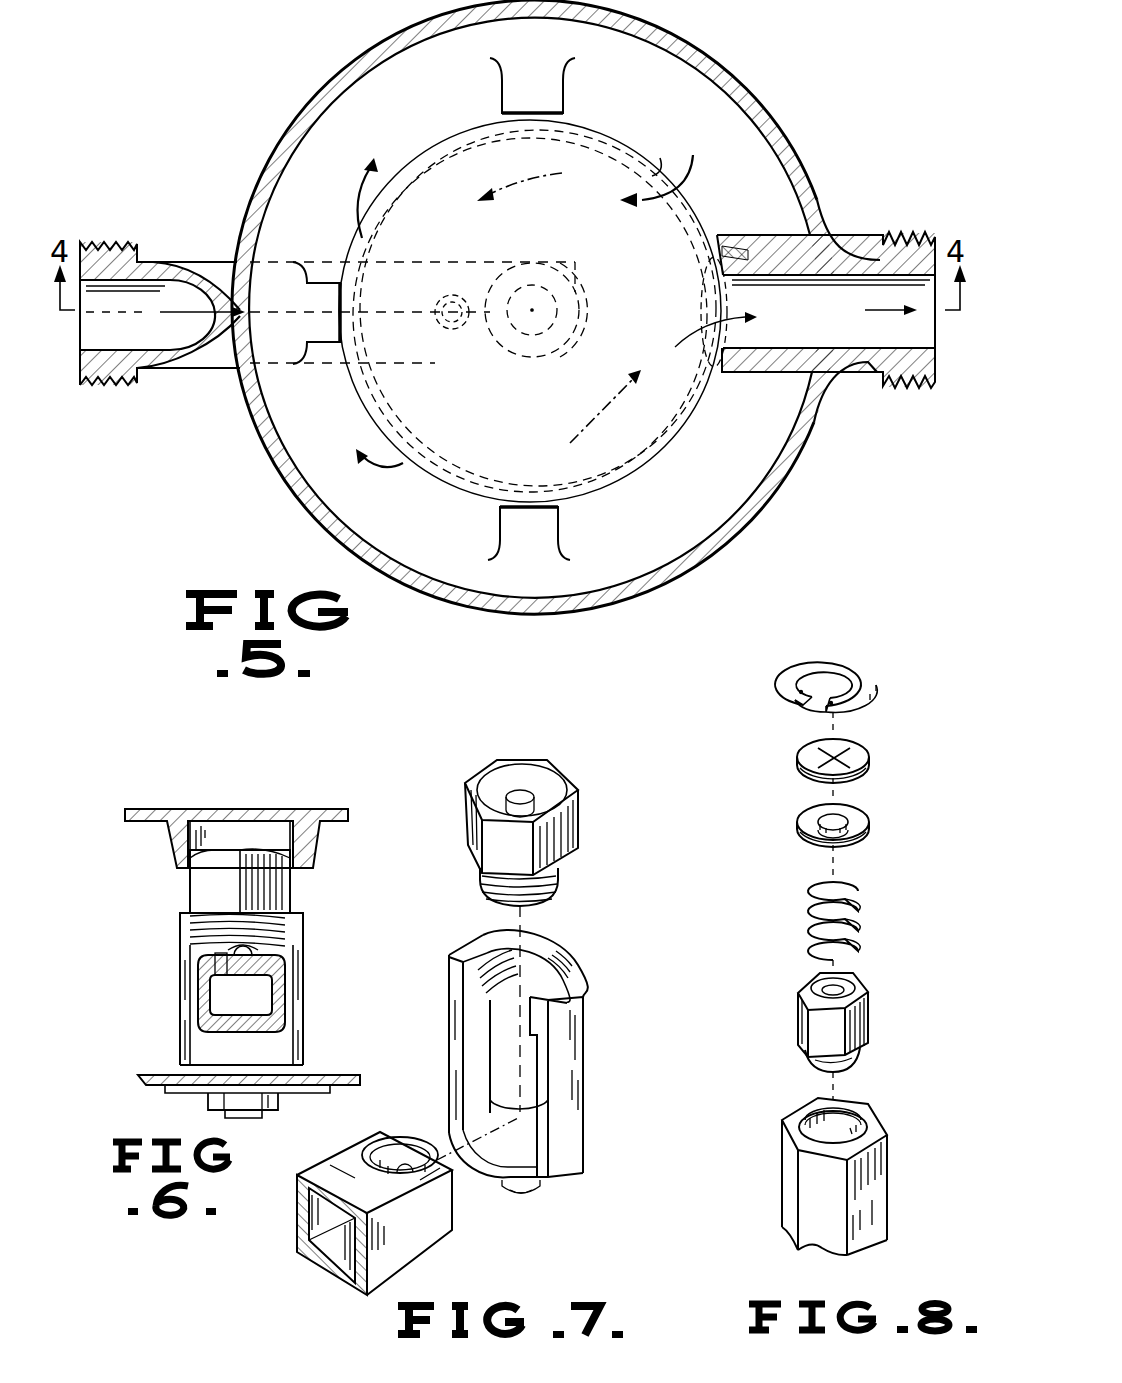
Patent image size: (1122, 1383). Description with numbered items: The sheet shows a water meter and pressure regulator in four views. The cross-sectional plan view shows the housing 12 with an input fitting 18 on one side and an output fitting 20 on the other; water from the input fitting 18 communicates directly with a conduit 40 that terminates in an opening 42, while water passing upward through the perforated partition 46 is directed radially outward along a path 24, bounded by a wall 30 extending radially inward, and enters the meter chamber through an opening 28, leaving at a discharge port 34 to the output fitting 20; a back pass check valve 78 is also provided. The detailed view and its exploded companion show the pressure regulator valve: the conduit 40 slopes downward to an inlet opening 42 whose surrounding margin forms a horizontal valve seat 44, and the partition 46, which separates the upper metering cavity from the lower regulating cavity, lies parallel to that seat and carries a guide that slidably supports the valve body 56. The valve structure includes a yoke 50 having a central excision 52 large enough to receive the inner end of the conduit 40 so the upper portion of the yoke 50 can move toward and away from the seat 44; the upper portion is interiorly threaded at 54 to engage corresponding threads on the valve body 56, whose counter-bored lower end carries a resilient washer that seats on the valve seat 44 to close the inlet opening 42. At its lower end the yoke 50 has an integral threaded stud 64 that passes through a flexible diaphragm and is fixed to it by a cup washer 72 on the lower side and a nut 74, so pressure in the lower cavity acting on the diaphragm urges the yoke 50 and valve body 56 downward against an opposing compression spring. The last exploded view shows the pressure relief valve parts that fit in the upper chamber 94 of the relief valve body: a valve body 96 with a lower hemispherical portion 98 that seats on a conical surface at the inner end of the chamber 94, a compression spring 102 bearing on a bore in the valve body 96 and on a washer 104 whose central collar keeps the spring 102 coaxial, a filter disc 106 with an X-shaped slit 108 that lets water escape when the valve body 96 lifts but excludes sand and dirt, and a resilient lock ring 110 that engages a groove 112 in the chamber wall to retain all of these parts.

In FIG. 5, the housing 12 is at (798, 170).
In FIG. 5, the input fitting 18 is at (150, 262).
In FIG. 5, the output fitting 20 is at (858, 258).
In FIG. 5, the tangential path 24 is at (680, 123).
In FIG. 5, the port 28 is at (668, 162).
In FIG. 5, the wall 30 is at (745, 246).
In FIG. 5, the discharge port 34 is at (698, 309).
In FIG. 5, the conduit 40 is at (435, 363).
In FIG. 6, the conduit 40 is at (243, 1032).
In FIG. 7, the conduit 40 is at (330, 1258).
In FIG. 6, the inlet opening 42 is at (219, 962).
In FIG. 7, the inlet opening 42 is at (406, 1175).
In FIG. 6, the valve seat 44 is at (282, 952).
In FIG. 7, the valve seat 44 is at (400, 1138).
In FIG. 6, the partition 46 is at (155, 810).
In FIG. 6, the yoke 50 is at (298, 993).
In FIG. 7, the yoke 50 is at (575, 1100).
In FIG. 7, the central excision 52 is at (542, 1143).
In FIG. 7, the interior threads 54 is at (495, 988).
In FIG. 6, the valve body 56 is at (288, 888).
In FIG. 7, the valve body 56 is at (576, 828).
In FIG. 7, the threaded stud 64 is at (524, 1196).
In FIG. 6, the cup washer 72 is at (177, 1087).
In FIG. 6, the nut 74 is at (272, 1100).
In FIG. 5, the back pass check valve 78 is at (437, 316).
In FIG. 8, the upper chamber 94 is at (868, 1118).
In FIG. 8, the valve body 96 is at (862, 1018).
In FIG. 8, the lower hemispherical portion 98 is at (858, 1062).
In FIG. 8, the compression spring 102 is at (853, 923).
In FIG. 8, the washer 104 is at (866, 820).
In FIG. 8, the filter disc 106 is at (862, 760).
In FIG. 8, the X-shaped slit 108 is at (818, 756).
In FIG. 8, the resilient lock ring 110 is at (846, 665).
In FIG. 8, the groove 112 is at (815, 1110).